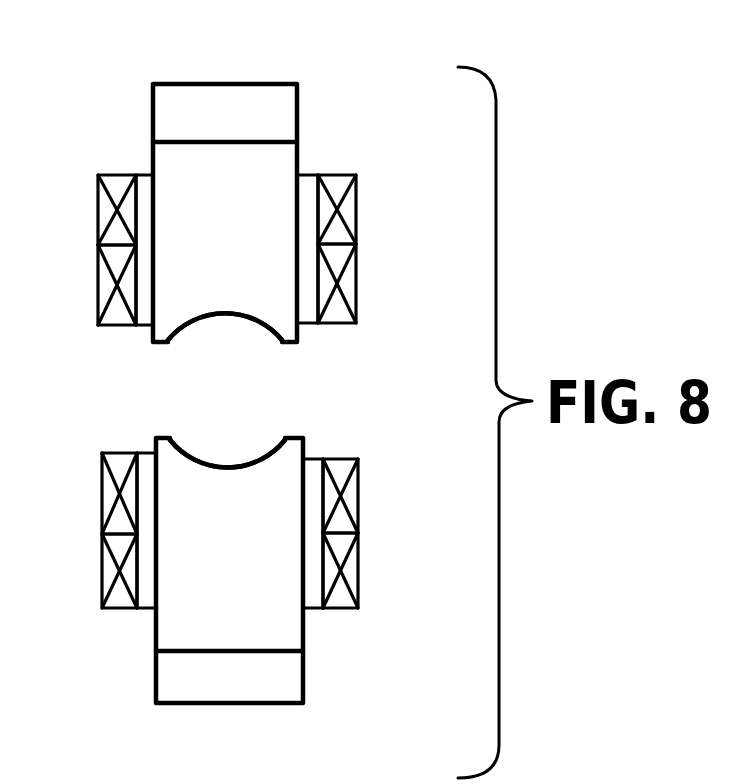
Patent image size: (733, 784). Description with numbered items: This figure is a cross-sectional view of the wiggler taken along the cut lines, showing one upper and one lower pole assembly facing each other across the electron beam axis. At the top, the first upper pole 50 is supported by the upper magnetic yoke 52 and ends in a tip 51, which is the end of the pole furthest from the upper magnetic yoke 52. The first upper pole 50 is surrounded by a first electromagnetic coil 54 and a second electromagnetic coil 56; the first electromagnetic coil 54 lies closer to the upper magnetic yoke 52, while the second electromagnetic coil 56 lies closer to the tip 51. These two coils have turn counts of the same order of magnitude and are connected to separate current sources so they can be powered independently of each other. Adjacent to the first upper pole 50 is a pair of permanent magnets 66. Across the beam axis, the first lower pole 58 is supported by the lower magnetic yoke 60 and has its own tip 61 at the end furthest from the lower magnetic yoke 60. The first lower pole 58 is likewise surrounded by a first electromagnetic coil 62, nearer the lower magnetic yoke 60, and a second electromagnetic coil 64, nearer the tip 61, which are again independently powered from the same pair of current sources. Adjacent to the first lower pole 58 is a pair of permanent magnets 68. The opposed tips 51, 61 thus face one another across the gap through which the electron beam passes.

The first upper pole 50 is at (250, 256).
The tip 51 is at (225, 346).
The upper magnetic yoke 52 is at (230, 86).
The first electromagnetic coil 54 is at (231, 210).
The second electromagnetic coil 56 is at (236, 284).
The pair of permanent magnets 66 is at (229, 217).
The first lower pole 58 is at (260, 543).
The lower magnetic yoke 60 is at (229, 704).
The tip 61 is at (227, 436).
The first electromagnetic coil 62 is at (230, 570).
The second electromagnetic coil 64 is at (229, 493).
The pair of permanent magnets 68 is at (234, 565).